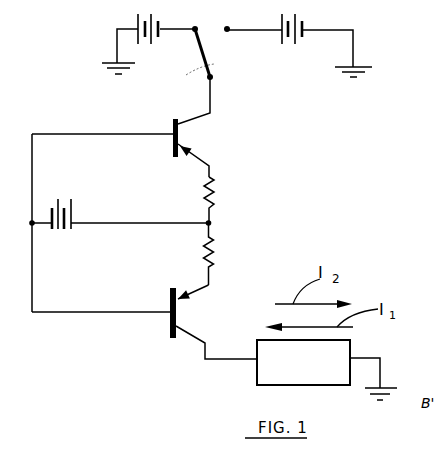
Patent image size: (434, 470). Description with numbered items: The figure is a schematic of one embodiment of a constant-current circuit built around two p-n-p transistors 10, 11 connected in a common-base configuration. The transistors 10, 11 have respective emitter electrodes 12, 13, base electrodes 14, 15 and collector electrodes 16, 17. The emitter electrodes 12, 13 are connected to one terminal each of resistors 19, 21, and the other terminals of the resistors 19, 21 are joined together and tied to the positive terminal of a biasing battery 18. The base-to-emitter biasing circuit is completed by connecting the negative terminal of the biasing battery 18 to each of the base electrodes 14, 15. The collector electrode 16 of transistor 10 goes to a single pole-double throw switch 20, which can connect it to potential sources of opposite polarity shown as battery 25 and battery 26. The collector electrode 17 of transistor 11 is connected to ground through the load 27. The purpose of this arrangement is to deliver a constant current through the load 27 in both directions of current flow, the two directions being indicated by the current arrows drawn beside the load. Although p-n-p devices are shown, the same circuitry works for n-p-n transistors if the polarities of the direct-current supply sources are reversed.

The p-n-p transistor 10 is at (193, 131).
The p-n-p transistor 11 is at (189, 313).
The emitter electrode 12 is at (192, 152).
The emitter electrode 13 is at (193, 291).
The base electrode 14 is at (172, 129).
The base electrode 15 is at (170, 312).
The collector electrode 16 is at (196, 118).
The collector electrode 17 is at (196, 337).
The biasing battery 18 is at (74, 213).
The resistor 19 is at (217, 191).
The single pole-double throw switch 20 is at (204, 53).
The resistor 21 is at (218, 249).
The battery 25 is at (137, 27).
The battery 26 is at (300, 19).
The load 27 is at (288, 385).